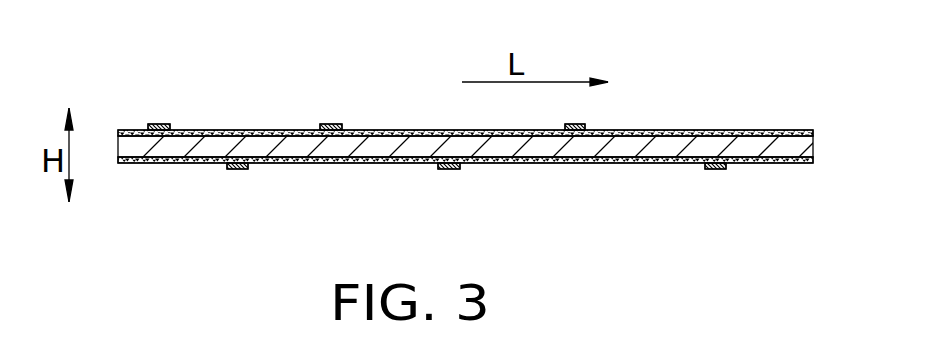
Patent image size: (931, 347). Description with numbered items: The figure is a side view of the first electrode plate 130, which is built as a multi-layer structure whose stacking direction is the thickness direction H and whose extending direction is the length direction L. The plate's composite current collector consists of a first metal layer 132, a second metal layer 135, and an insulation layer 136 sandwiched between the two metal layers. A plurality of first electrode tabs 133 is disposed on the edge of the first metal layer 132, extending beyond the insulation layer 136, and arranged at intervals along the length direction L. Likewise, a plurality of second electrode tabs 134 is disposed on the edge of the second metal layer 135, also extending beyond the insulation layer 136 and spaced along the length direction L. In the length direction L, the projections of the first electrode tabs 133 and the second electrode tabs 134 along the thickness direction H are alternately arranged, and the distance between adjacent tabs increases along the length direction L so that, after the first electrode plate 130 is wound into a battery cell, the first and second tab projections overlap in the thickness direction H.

The first electrode plate 130 is at (364, 66).
The first metal layer 132 is at (668, 129).
The first electrode tab 133 is at (332, 124).
The second electrode tab 134 is at (450, 168).
The second metal layer 135 is at (747, 163).
The insulation layer 136 is at (750, 145).